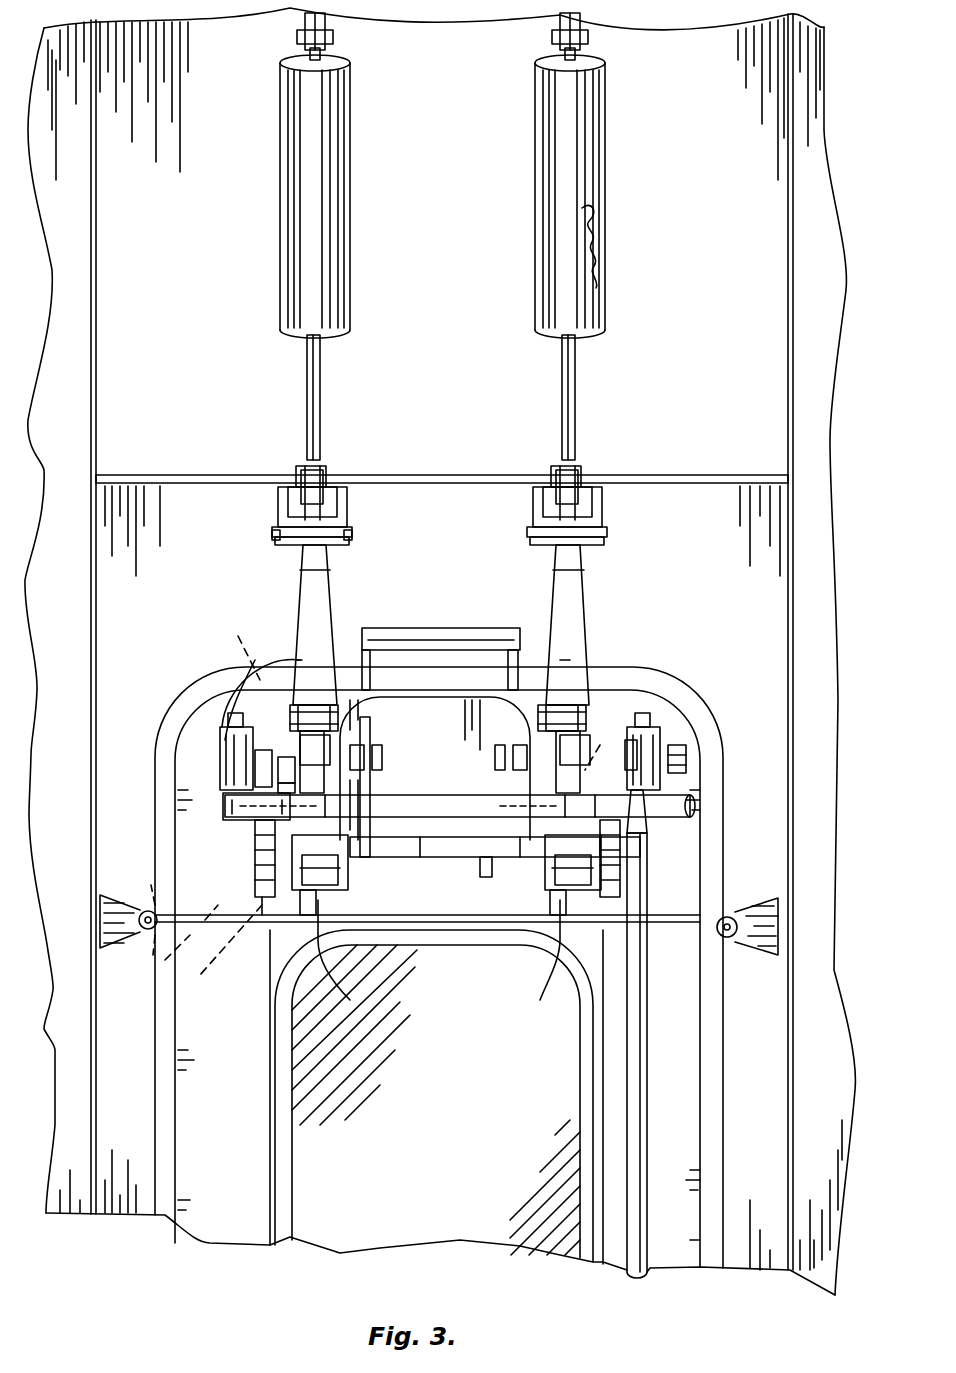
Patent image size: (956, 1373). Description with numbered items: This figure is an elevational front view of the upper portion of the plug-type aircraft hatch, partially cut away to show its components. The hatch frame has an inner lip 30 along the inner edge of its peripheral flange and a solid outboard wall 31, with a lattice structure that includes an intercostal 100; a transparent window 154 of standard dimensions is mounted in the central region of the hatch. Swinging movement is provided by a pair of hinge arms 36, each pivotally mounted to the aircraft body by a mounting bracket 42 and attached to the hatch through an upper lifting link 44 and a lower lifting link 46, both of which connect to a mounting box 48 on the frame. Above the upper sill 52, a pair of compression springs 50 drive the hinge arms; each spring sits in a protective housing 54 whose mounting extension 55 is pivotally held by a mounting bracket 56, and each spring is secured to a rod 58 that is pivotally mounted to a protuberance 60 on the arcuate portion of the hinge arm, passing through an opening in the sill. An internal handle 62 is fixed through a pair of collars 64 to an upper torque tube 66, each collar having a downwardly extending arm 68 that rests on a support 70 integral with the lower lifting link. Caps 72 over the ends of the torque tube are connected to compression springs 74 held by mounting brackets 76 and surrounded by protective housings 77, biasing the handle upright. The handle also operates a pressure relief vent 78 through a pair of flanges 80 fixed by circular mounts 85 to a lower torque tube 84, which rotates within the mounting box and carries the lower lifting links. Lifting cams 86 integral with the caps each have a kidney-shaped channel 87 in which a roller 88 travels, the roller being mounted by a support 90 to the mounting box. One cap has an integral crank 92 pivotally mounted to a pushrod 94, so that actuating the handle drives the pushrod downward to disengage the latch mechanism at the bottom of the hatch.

The inner lip 30 is at (170, 1100).
The outboard wall 31 is at (215, 888).
The hinge arm 36 is at (320, 607).
The mounting bracket 42 is at (348, 510).
The upper lifting link 44 is at (312, 715).
The lower lifting link 46 is at (318, 920).
The mounting box 48 is at (275, 915).
The compression spring 50 is at (600, 232).
The upper sill 52 is at (160, 476).
The protective housing 54 is at (340, 168).
The mounting extension 55 is at (322, 52).
The mounting bracket 56 is at (330, 22).
The rod 58 is at (322, 386).
The protuberance 60 is at (302, 502).
The internal handle 62 is at (445, 636).
The collar 64 is at (462, 880).
The upper torque tube 66 is at (460, 806).
The downwardly extending arm 68 is at (485, 880).
The support 70 is at (500, 880).
The cap 72 is at (223, 806).
The compression spring 74 is at (220, 752).
The mounting bracket 76 is at (224, 727).
The protective housing 77 is at (222, 768).
The pressure relief vent 78 is at (451, 766).
The flange 80 is at (371, 727).
The lower torque tube 84 is at (495, 848).
The circular mount 85 is at (365, 870).
The lifting cam 86 is at (255, 840).
The kidney-shaped channel 87 is at (178, 962).
The roller 88 is at (258, 745).
The support 90 is at (285, 745).
The crank 92 is at (687, 760).
The pushrod 94 is at (648, 1056).
The intercostal 100 is at (292, 985).
The transparent window 154 is at (455, 1202).